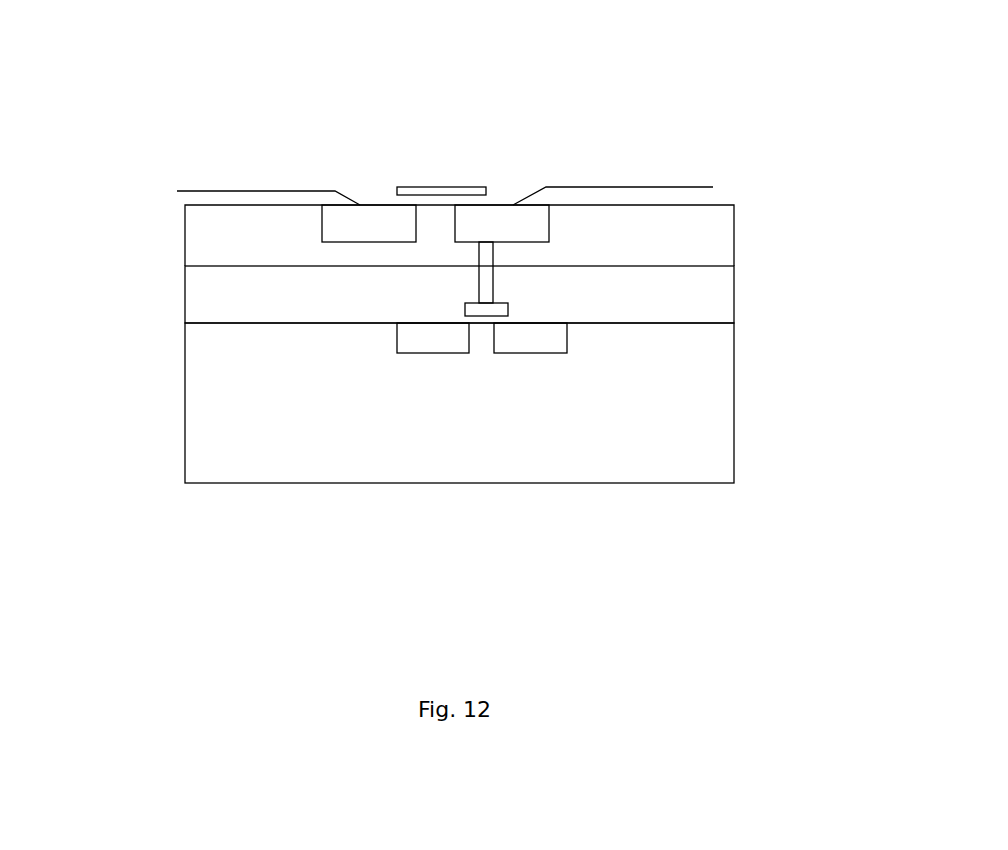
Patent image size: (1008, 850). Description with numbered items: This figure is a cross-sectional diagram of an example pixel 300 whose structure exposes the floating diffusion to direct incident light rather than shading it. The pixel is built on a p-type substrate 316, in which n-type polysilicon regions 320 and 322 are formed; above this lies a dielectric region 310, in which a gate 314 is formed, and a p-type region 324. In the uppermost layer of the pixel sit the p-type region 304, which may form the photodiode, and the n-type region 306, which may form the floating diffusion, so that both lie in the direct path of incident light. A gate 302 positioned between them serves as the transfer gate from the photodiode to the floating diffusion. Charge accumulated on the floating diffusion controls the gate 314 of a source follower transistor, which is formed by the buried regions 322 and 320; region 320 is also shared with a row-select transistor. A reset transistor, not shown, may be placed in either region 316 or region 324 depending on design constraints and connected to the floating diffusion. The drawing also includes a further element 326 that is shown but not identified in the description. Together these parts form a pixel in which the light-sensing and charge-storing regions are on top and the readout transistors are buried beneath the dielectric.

The example pixel 300 is at (503, 128).
The gate 302 is at (432, 187).
The p-type region 304 is at (642, 188).
The n-type region 306 is at (249, 193).
The dielectric region 310 is at (716, 280).
The gate 314 is at (508, 308).
The p-type substrate 316 is at (702, 396).
The n-type polysilicon region 320 is at (433, 353).
The n-type polysilicon region 322 is at (530, 353).
The p-type region 324 is at (734, 205).
The via post 326 is at (266, 264).